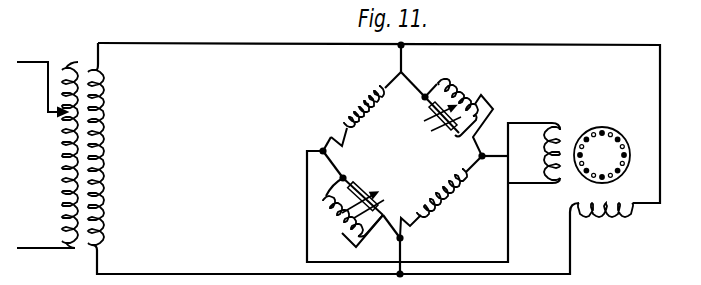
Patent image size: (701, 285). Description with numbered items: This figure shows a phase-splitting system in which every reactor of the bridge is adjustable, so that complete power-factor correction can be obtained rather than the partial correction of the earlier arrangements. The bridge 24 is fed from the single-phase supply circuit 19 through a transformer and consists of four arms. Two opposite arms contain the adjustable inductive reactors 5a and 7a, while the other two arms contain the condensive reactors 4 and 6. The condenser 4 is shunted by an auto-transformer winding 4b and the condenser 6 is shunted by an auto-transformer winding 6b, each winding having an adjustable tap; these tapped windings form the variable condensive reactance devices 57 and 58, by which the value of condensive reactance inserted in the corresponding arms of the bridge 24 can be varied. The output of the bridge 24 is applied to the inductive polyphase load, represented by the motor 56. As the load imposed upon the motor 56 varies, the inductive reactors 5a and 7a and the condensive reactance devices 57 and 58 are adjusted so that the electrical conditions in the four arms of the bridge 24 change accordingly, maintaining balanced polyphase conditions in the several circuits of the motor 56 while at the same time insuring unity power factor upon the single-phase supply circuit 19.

The single-phase supply circuit 19 is at (28, 88).
The bridge 24 is at (403, 156).
The adjustable inductive reactor 5a is at (344, 121).
The condensive reactor 4 is at (427, 106).
The auto-transformer winding 4b is at (449, 88).
The variable condensive reactance device 57 is at (445, 122).
The adjustable inductive reactor 7a is at (446, 200).
The condensive reactor 6 is at (354, 189).
The auto-transformer winding 6b is at (339, 228).
The variable condensive reactance device 58 is at (374, 202).
The motor 56 is at (637, 139).